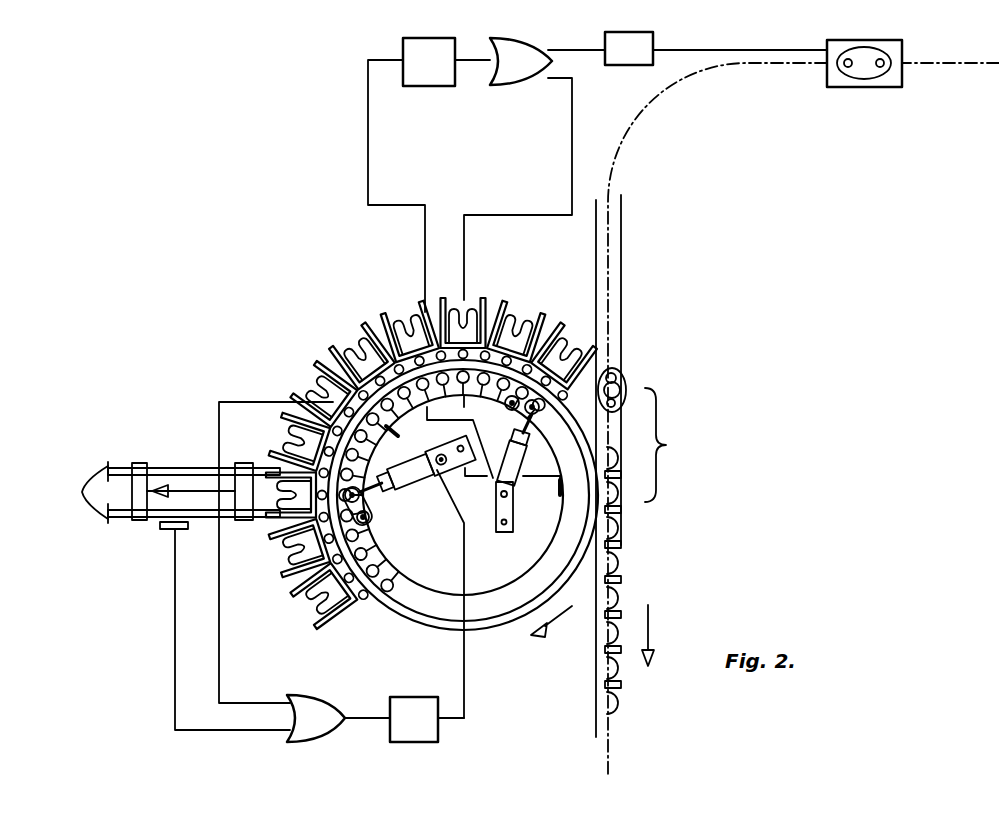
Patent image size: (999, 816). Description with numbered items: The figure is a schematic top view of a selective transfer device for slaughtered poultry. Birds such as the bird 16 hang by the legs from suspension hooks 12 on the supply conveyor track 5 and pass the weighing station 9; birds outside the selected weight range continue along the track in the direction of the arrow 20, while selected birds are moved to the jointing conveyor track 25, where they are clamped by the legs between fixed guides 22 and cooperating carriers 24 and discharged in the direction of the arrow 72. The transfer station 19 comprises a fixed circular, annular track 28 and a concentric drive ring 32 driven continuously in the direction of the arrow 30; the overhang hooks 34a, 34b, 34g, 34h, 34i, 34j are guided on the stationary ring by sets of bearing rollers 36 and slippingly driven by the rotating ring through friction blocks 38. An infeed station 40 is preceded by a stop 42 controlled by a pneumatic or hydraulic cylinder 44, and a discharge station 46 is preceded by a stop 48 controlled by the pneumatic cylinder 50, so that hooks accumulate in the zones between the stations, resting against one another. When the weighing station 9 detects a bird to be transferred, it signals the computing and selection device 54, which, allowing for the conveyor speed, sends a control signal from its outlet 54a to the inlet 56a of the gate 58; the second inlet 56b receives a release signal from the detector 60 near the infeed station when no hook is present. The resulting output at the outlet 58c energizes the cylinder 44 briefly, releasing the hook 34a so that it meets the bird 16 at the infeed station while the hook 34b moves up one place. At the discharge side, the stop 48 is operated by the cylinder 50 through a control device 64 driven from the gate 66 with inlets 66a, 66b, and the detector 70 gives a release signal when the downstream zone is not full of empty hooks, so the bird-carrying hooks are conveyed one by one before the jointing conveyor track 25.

The supply conveyor track 5 is at (948, 70).
The weighing station 9 is at (870, 88).
The suspension hook 12 is at (622, 705).
The bird 16 is at (876, 52).
The transfer station 19 is at (506, 606).
The arrow 20 is at (650, 625).
The fixed guides 22 is at (78, 496).
The carriers 24 is at (140, 520).
The jointing conveyor track 25 is at (160, 452).
The fixed circular annular track 28 is at (433, 632).
The arrow 30 is at (568, 630).
The drive ring 32 is at (402, 604).
The overhang hook 34a is at (585, 347).
The overhang hook 34b is at (525, 330).
The overhang hook 34g is at (285, 428).
The overhang hook 34h is at (298, 452).
The overhang hook 34i is at (300, 585).
The overhang hook 34j is at (325, 625).
The bearing rollers 36 is at (556, 402).
The friction blocks 38 is at (383, 567).
The infeed station 40 is at (668, 446).
The stop 42 is at (560, 418).
The pneumatic or hydraulic cylinder 44 is at (520, 470).
The discharge station 46 is at (279, 539).
The stop 48 is at (372, 520).
The pneumatic cylinder 50 is at (412, 482).
The computing and selection device 54 is at (656, 44).
The outlet 54a is at (586, 60).
The inlet 56a is at (560, 48).
The second inlet 56b is at (556, 86).
The gate 58 is at (526, 40).
The outlet 58c is at (471, 58).
The detector 60 is at (403, 42).
The control device 64 is at (440, 734).
The gate 66 is at (311, 742).
The inlet 66a is at (212, 731).
The inlet 66b is at (247, 703).
The detector 70 is at (400, 433).
The arrow 72 is at (185, 468).